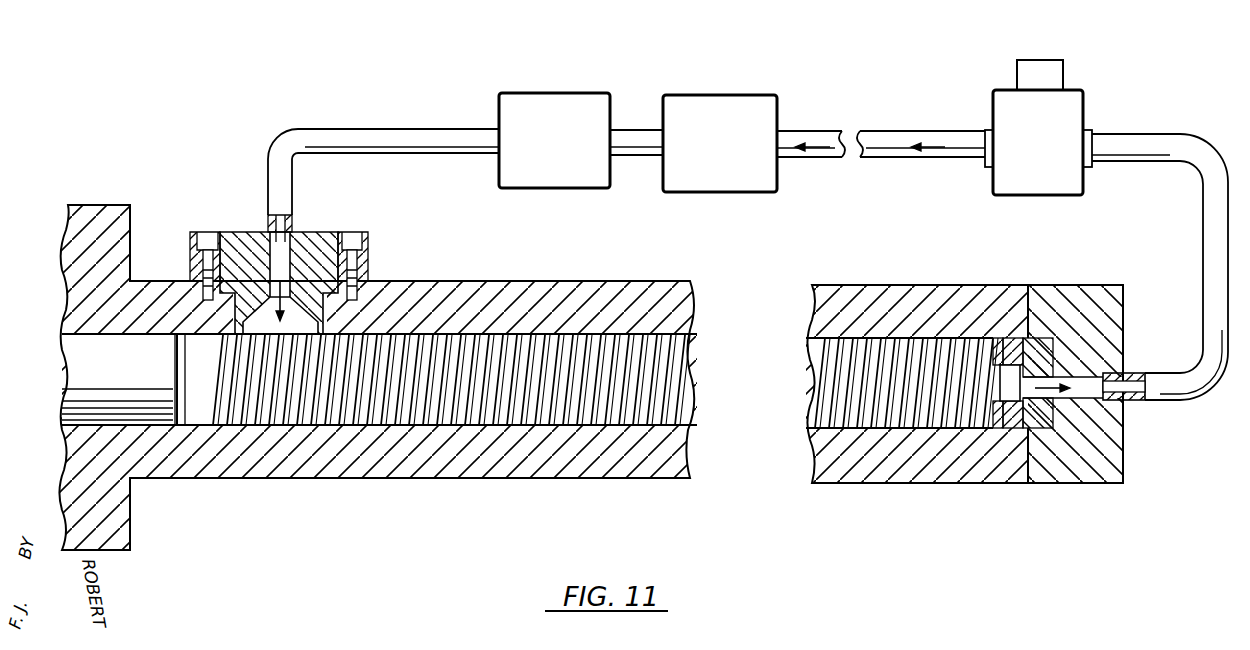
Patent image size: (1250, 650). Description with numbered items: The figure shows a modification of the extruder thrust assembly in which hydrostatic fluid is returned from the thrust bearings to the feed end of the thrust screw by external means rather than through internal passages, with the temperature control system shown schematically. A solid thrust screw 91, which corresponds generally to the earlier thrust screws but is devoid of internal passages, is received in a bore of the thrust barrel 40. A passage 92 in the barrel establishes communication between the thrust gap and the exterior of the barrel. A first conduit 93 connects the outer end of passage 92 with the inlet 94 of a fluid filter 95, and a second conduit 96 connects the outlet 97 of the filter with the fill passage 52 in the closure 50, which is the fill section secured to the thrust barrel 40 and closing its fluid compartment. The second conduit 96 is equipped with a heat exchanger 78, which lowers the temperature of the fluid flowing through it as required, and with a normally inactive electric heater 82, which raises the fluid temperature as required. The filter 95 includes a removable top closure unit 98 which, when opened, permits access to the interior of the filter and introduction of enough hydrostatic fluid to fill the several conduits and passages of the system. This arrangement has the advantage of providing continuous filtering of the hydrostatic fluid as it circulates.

The thrust barrel 40 is at (535, 293).
The closure 50 is at (236, 243).
The fill passage 52 is at (277, 257).
The heat exchanger 78 is at (563, 102).
The electric heater 82 is at (713, 102).
The thrust screw 91 is at (698, 360).
The passage 92 is at (1117, 406).
The first conduit 93 is at (1217, 261).
The inlet 94 is at (1092, 167).
The fluid filter 95 is at (1073, 112).
The second conduit 96 is at (403, 137).
The outlet 97 is at (985, 172).
The removable top closure unit 98 is at (1020, 68).